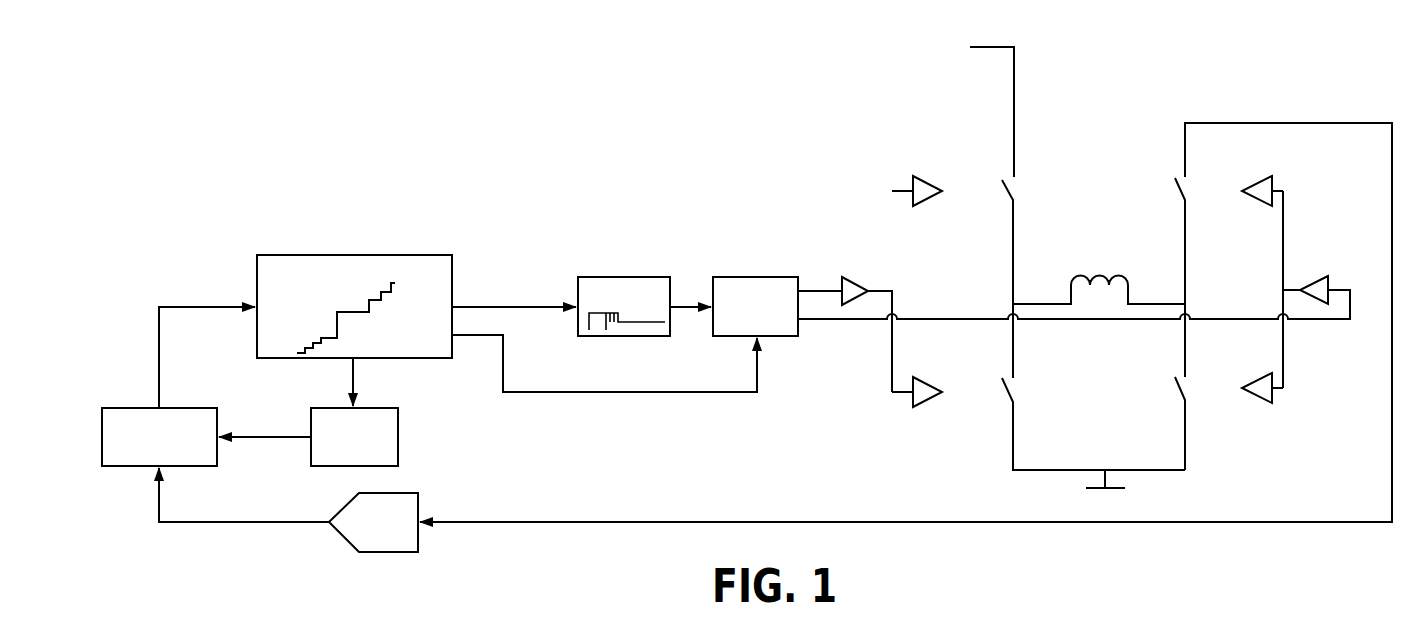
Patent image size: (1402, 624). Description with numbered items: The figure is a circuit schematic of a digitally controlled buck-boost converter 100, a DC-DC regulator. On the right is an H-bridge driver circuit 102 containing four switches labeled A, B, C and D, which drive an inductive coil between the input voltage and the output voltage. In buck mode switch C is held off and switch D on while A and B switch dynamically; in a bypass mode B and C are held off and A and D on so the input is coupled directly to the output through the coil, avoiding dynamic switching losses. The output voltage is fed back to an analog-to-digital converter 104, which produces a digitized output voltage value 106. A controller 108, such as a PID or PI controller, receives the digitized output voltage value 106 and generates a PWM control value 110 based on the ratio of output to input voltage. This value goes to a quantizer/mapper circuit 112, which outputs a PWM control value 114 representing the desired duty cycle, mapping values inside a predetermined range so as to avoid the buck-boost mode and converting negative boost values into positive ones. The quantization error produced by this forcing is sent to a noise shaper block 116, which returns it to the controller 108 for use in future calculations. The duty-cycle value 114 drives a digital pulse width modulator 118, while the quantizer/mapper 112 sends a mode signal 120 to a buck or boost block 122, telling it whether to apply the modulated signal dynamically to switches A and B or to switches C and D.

The buck-boost converter 100 is at (570, 145).
The H-bridge driver circuit 102 is at (1160, 85).
The analog-to-digital converter 104 is at (419, 504).
The digitized output voltage value 106 is at (255, 524).
The controller 108 is at (138, 406).
The PWM control value 110 is at (191, 303).
The quantizer/mapper circuit 112 is at (356, 255).
The PWM control value 114 is at (483, 303).
The noise shaper block 116 is at (400, 434).
The digital pulse width modulator 118 is at (628, 276).
The mode signal 120 is at (666, 392).
The buck or boost block 122 is at (785, 337).